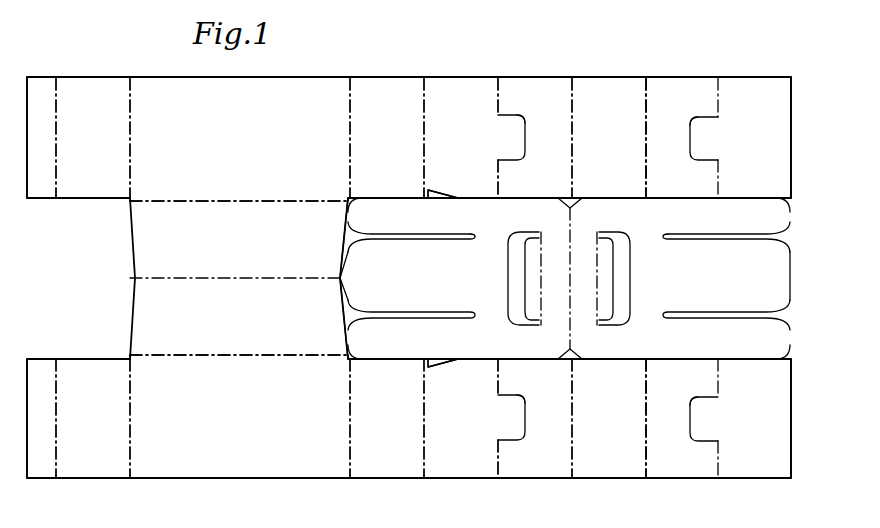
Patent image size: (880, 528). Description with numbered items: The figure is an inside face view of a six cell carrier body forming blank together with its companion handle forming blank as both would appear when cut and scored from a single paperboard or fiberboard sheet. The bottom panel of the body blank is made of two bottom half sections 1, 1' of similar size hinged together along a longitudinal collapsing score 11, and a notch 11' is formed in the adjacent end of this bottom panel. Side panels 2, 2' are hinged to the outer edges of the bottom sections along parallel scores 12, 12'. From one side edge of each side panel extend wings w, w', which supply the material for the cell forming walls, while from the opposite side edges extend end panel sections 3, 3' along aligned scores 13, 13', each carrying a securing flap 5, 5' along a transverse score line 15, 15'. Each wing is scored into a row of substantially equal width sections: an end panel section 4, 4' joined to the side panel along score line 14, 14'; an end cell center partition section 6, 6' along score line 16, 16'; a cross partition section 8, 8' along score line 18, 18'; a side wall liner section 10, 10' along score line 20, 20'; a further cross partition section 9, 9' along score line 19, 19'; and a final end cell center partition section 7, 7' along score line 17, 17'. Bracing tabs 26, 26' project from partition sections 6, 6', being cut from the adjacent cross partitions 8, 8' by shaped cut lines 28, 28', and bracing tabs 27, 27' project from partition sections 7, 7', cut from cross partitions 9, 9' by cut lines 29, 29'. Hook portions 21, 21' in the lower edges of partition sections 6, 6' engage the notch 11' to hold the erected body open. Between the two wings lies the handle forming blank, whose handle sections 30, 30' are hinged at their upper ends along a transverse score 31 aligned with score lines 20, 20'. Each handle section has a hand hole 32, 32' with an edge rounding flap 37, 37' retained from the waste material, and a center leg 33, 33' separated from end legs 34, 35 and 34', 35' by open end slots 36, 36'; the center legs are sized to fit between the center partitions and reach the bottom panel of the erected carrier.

The bottom half section 1 is at (239, 222).
The bottom half section 1' is at (239, 328).
The side panel 2 is at (240, 138).
The side panel 2' is at (240, 418).
The end panel section 3 is at (72, 138).
The end panel section 3' is at (76, 418).
The end panel section 4 is at (401, 138).
The end panel section 4' is at (400, 418).
The securing flap 5 is at (36, 137).
The securing flap 5' is at (37, 418).
The end cell center partition section 6 is at (474, 138).
The end cell center partition section 6' is at (475, 418).
The end cell center partition section 7 is at (770, 137).
The end cell center partition section 7' is at (770, 418).
The cross partition section 8 is at (555, 138).
The cross partition section 8' is at (556, 418).
The cross partition section 9 is at (658, 138).
The cross partition section 9' is at (659, 418).
The side wall liner section 10 is at (622, 138).
The side wall liner section 10' is at (622, 418).
The collapsing score 11 is at (235, 267).
The notch 11' is at (327, 278).
The score 12 is at (239, 191).
The score 12' is at (239, 368).
The score 13 is at (145, 138).
The score 13' is at (149, 418).
The score line 14 is at (333, 138).
The score line 14' is at (328, 418).
The transverse score line 15 is at (71, 138).
The transverse score line 15' is at (73, 418).
The score line 16 is at (408, 138).
The score line 16' is at (407, 418).
The score line 17 is at (732, 138).
The score line 17' is at (734, 418).
The score line 18 is at (513, 138).
The score line 18' is at (515, 418).
The score line 19 is at (660, 138).
The score line 19' is at (662, 418).
The score line 20 is at (586, 138).
The score line 20' is at (588, 418).
The hook portion 21 is at (426, 189).
The hook portion 21' is at (426, 369).
The bracing tab 26 is at (511, 137).
The bracing tab 26' is at (511, 417).
The bracing tab 27 is at (704, 138).
The bracing tab 27' is at (704, 419).
The cut line 28 is at (528, 110).
The cut line 28' is at (528, 389).
The cut line 29 is at (685, 110).
The cut line 29' is at (686, 389).
The handle section 30 is at (460, 278).
The handle section 30' is at (679, 278).
The transverse score 31 is at (572, 303).
The hand hole 32 is at (521, 268).
The hand hole 32' is at (624, 269).
The center leg 33 is at (367, 276).
The center leg 33' is at (771, 276).
The end leg 34 is at (409, 216).
The end leg 34' is at (729, 216).
The end leg 35 is at (376, 344).
The end leg 35' is at (755, 344).
The open end slot 36 is at (411, 282).
The open end slot 36' is at (726, 282).
The edge rounding flap 37 is at (543, 278).
The edge rounding flap 37' is at (595, 278).
The wing w is at (799, 137).
The wing w' is at (800, 418).